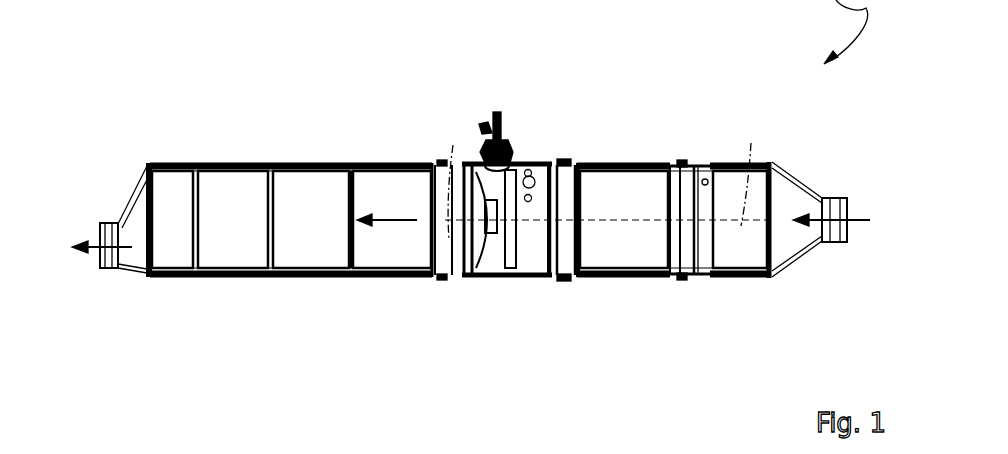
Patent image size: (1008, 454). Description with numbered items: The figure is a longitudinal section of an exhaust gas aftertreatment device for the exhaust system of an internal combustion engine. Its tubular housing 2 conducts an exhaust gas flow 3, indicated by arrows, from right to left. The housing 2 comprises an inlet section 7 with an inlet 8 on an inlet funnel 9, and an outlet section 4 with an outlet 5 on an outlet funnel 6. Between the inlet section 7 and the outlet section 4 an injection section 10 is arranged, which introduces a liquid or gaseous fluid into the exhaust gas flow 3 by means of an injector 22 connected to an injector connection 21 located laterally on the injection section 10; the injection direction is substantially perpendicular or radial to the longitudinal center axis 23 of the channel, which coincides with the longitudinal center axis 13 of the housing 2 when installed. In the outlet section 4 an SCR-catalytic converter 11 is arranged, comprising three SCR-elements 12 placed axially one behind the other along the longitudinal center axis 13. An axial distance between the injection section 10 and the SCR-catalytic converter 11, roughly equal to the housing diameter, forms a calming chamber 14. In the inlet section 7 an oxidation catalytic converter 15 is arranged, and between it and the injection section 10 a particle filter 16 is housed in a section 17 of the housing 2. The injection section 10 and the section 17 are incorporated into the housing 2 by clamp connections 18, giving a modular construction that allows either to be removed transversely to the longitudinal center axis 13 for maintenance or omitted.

The tubular housing 2 is at (226, 150).
The exhaust gas flow 3 is at (97, 240).
The outlet section 4 is at (307, 120).
The outlet 5 is at (101, 257).
The outlet funnel 6 is at (132, 206).
The inlet section 7 is at (675, 122).
The inlet 8 is at (847, 210).
The inlet funnel 9 is at (790, 173).
The injection section 10 is at (518, 110).
The SCR-catalytic converter 11 is at (358, 260).
The SCR-element 12 is at (160, 242).
The longitudinal center axis 13 is at (750, 172).
The calming chamber 14 is at (384, 259).
The oxidation catalytic converter 15 is at (728, 255).
The particle filter 16 is at (611, 241).
The section 17 is at (620, 150).
The clamp connection 18 is at (441, 281).
The injector connection 21 is at (508, 160).
The injector 22 is at (498, 133).
The longitudinal center axis 23 is at (437, 179).